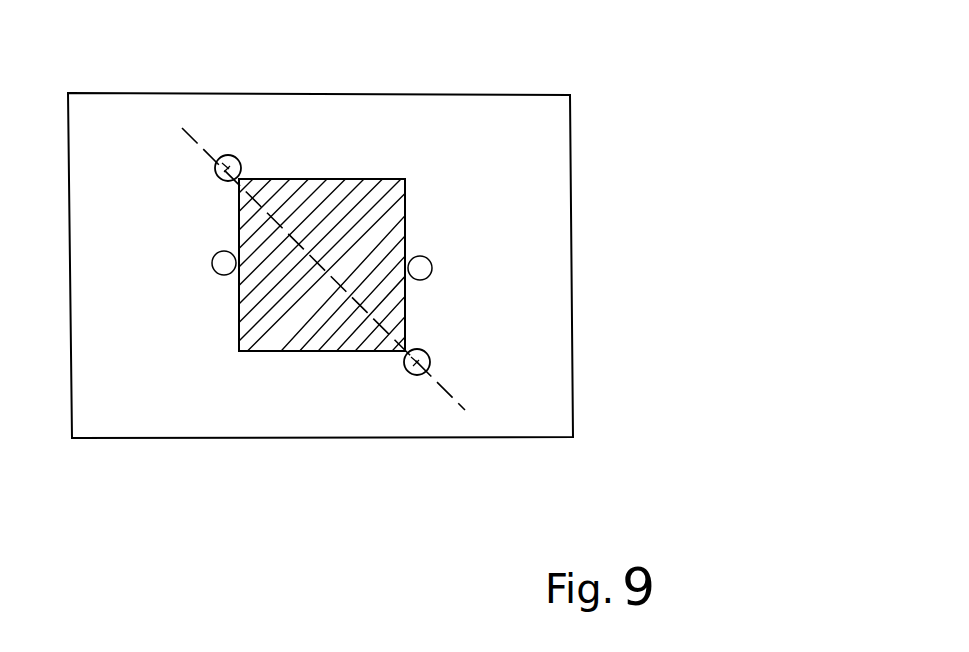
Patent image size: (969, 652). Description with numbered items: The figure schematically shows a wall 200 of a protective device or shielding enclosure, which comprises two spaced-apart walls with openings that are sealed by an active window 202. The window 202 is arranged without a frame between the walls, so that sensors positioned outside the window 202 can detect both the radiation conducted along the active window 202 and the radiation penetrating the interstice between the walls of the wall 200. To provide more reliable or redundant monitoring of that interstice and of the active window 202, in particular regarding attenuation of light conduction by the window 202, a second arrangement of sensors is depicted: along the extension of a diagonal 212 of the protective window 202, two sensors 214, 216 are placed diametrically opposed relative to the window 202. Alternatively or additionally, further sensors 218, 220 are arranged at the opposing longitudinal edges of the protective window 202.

The wall 200 is at (540, 375).
The active window 202 is at (406, 211).
The diagonal 212 is at (445, 387).
The sensor 214 is at (227, 155).
The sensor 216 is at (430, 352).
The sensor 218 is at (224, 275).
The sensor 220 is at (432, 267).